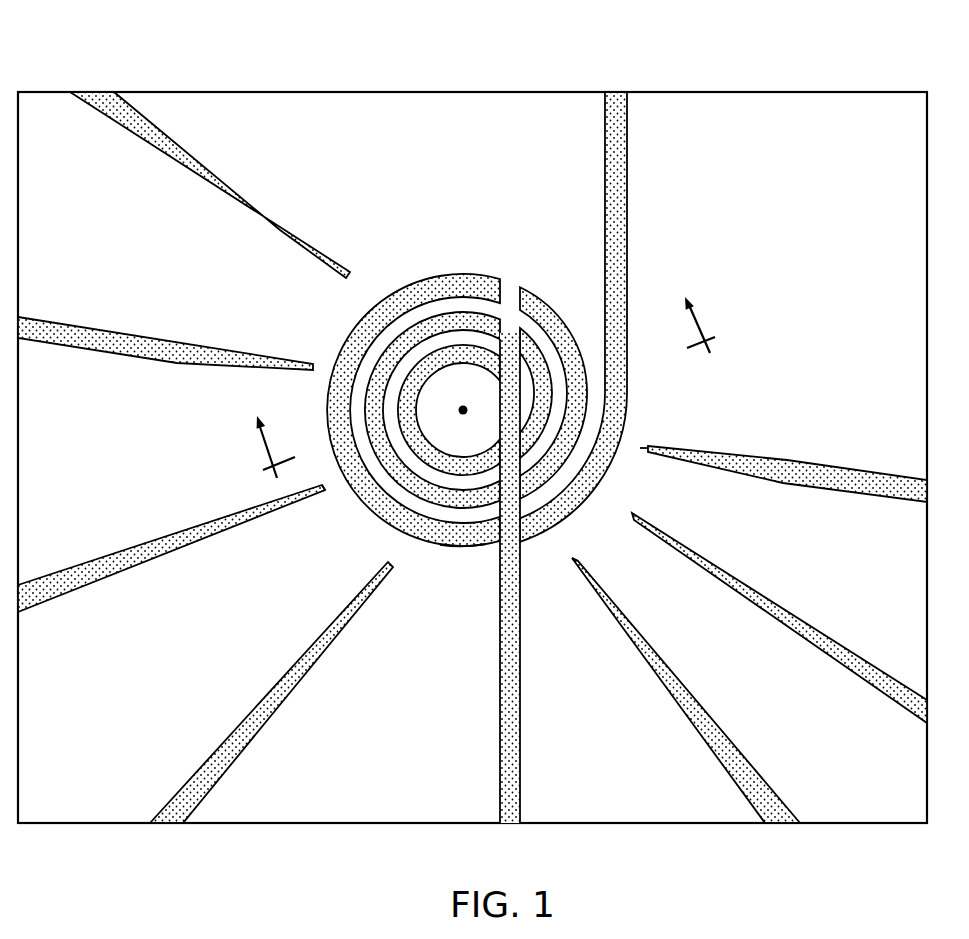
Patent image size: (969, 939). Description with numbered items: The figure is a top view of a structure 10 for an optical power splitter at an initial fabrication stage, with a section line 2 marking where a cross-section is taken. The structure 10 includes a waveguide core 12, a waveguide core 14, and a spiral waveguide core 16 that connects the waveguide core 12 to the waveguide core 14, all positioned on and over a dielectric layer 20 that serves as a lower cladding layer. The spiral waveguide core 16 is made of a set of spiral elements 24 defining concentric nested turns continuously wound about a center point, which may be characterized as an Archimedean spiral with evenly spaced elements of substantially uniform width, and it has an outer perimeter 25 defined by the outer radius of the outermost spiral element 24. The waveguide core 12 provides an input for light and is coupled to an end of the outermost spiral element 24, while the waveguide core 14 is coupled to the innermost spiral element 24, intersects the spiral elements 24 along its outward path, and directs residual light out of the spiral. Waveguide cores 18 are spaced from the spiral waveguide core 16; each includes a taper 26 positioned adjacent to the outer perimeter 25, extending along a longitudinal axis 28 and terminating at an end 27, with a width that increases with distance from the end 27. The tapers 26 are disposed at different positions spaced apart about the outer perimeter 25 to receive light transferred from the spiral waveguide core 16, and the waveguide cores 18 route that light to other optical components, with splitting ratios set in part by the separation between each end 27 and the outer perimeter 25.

The structure 10 is at (468, 418).
The waveguide core 12 is at (622, 177).
The waveguide core 14 is at (500, 752).
The spiral waveguide core 16 is at (413, 417).
The waveguide cores 18 is at (197, 314).
The dielectric layer 20 is at (68, 764).
The spiral elements 24 is at (438, 362).
The outer perimeter 25 is at (455, 550).
The taper 26 is at (290, 232).
The end 27 is at (325, 489).
The longitudinal axis 28 is at (678, 450).
The section line 2 is at (477, 374).